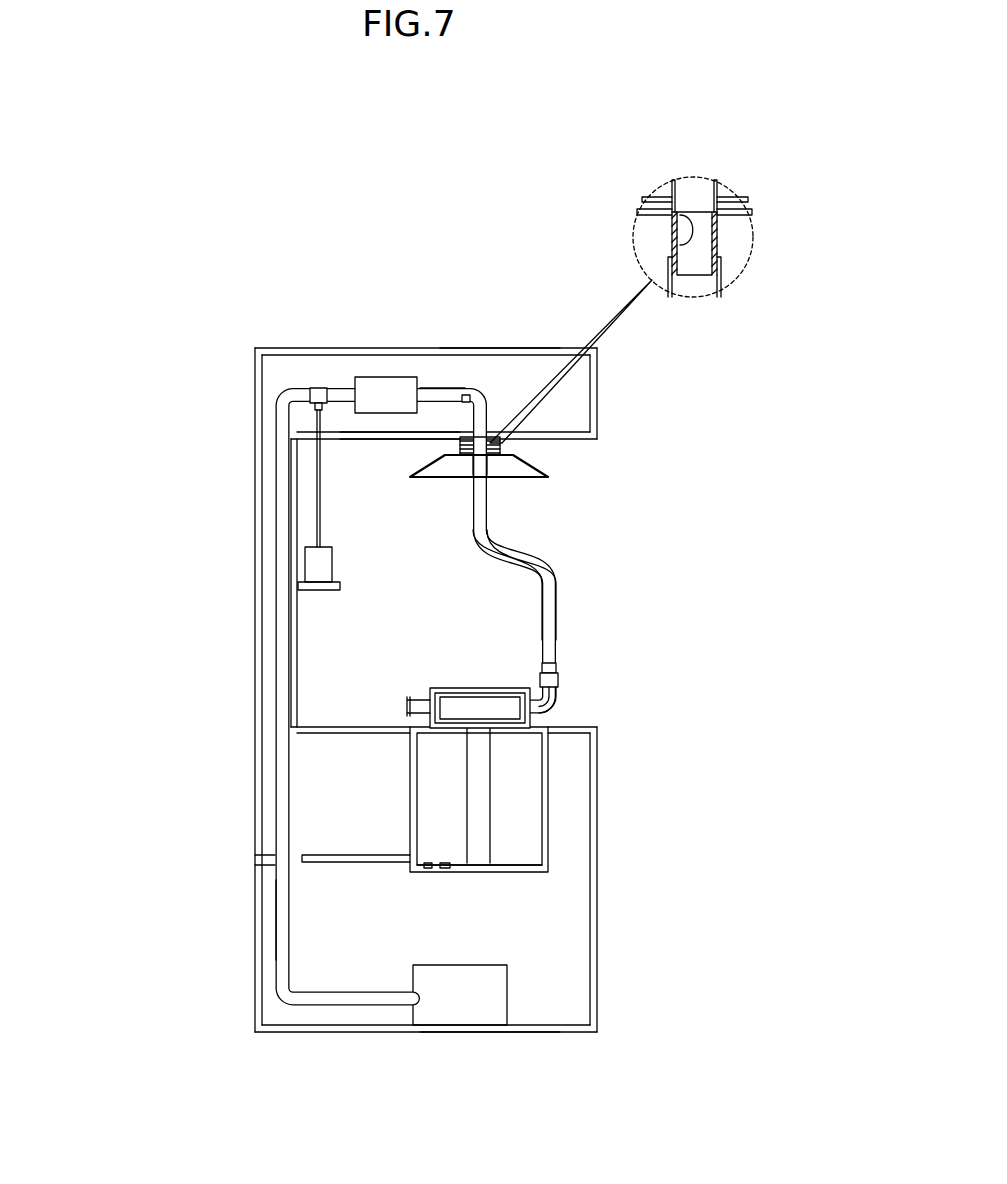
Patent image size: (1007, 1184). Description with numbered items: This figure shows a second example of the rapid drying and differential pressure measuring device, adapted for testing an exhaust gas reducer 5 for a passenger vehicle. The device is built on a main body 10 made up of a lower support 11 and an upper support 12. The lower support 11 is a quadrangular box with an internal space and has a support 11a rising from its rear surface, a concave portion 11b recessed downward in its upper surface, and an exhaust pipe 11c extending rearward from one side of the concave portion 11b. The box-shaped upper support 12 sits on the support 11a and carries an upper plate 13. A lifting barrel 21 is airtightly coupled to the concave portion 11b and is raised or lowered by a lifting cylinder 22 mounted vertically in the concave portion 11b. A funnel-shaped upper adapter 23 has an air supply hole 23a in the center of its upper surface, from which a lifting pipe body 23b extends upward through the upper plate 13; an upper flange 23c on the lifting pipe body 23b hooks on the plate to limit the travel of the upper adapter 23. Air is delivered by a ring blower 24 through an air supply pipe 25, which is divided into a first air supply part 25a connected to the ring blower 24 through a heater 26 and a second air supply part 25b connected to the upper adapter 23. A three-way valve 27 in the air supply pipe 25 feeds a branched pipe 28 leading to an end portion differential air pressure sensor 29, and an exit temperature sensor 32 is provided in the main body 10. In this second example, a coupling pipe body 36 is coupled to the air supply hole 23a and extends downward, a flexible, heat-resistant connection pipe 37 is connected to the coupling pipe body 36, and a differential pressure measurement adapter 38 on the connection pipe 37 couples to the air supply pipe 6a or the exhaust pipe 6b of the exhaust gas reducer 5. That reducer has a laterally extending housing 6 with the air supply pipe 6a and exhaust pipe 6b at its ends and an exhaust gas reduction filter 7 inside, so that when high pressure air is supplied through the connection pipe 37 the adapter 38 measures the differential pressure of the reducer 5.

The exhaust gas reducer for a passenger vehicle 5 is at (425, 673).
The housing 6 is at (445, 690).
The air supply pipe 6a is at (408, 707).
The exhaust pipe 6b is at (558, 700).
The exhaust gas reduction filter 7 is at (475, 690).
The main body 10 is at (222, 663).
The lower support 11 is at (597, 905).
The support 11a is at (257, 620).
The concave portion 11b is at (520, 860).
The exhaust pipe 11c is at (323, 855).
The upper support 12 is at (497, 347).
The upper plate 13 is at (395, 440).
The lifting barrel 21 is at (547, 800).
The lifting cylinder 22 is at (492, 770).
The upper adapter 23 is at (548, 458).
The air supply hole 23a is at (680, 238).
The lifting pipe body 23b is at (735, 190).
The upper flange 23c is at (658, 197).
The ring blower 24 is at (507, 1005).
The air supply pipe 25 is at (262, 780).
The first air supply part 25a is at (275, 902).
The second air supply part 25b is at (447, 388).
The heater 26 is at (388, 377).
The 3-way valve 27 is at (318, 388).
The branched pipe 28 is at (317, 480).
The end portion differential air pressure sensor 29 is at (305, 565).
The exit temperature sensor 32 is at (526, 1048).
The coupling pipe body 36 is at (490, 464).
The connection pipe 37 is at (540, 568).
The differential pressure measurement adapter 38 is at (560, 674).